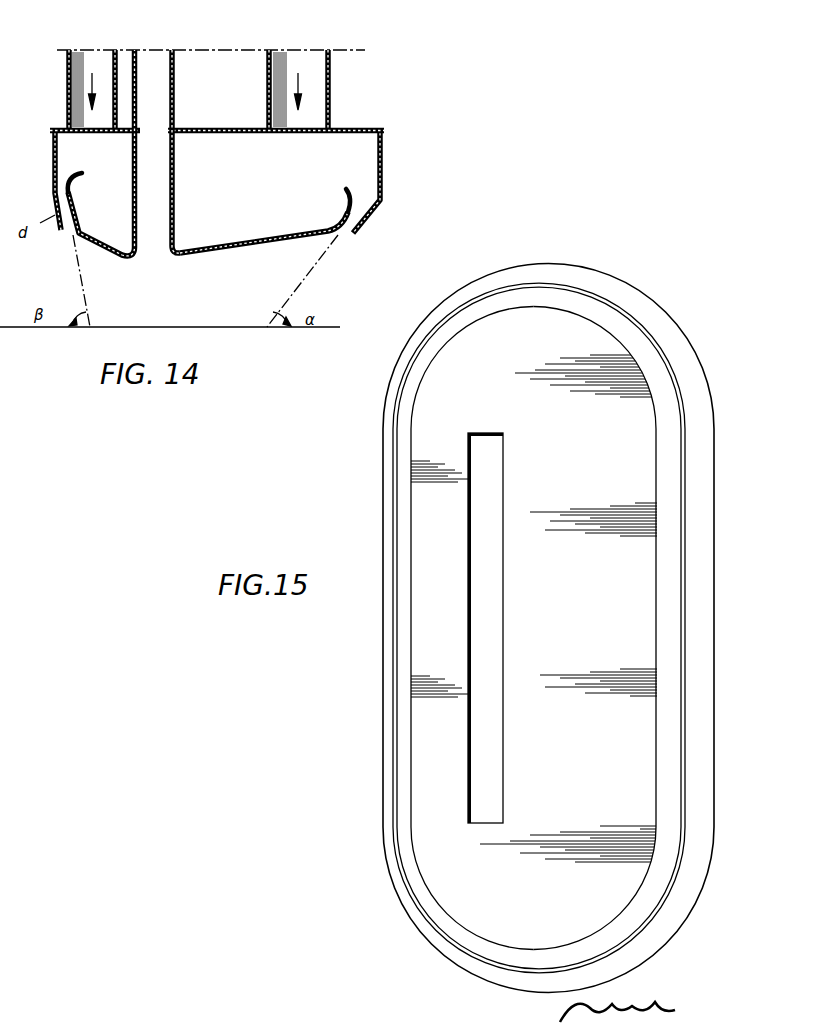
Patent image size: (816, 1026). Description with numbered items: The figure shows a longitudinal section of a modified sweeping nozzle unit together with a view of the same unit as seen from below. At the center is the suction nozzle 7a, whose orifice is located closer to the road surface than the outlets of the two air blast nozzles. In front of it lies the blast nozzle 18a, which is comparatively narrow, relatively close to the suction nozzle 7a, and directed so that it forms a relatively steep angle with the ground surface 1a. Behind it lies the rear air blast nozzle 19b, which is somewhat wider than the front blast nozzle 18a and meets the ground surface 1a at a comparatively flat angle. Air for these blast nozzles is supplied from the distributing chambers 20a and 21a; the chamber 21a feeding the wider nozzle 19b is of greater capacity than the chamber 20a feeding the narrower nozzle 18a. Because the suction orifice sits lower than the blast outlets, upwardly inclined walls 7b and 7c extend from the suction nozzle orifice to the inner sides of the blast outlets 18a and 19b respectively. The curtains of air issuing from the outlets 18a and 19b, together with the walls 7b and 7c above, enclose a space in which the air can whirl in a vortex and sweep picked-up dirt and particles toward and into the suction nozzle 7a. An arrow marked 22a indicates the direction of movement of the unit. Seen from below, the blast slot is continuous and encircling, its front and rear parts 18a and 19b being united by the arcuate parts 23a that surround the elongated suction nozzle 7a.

In FIG. 14, the ground surface 1a is at (185, 328).
In FIG. 14, the suction nozzle 7a is at (162, 238).
In FIG. 15, the suction nozzle 7a is at (493, 666).
In FIG. 14, the upwardly inclined wall 7b is at (105, 248).
In FIG. 14, the upwardly inclined wall 7c is at (264, 246).
In FIG. 14, the front air blast nozzle 18a is at (63, 178).
In FIG. 15, the front air blast nozzle 18a is at (403, 617).
In FIG. 14, the rear air blast nozzle 19b is at (362, 193).
In FIG. 15, the rear air blast nozzle 19b is at (667, 617).
In FIG. 14, the distributing chamber 20a is at (63, 128).
In FIG. 14, the distributing chamber 21a is at (356, 136).
In FIG. 14, the direction of movement 22a is at (226, 29).
In FIG. 15, the arcuate parts 23a is at (618, 328).